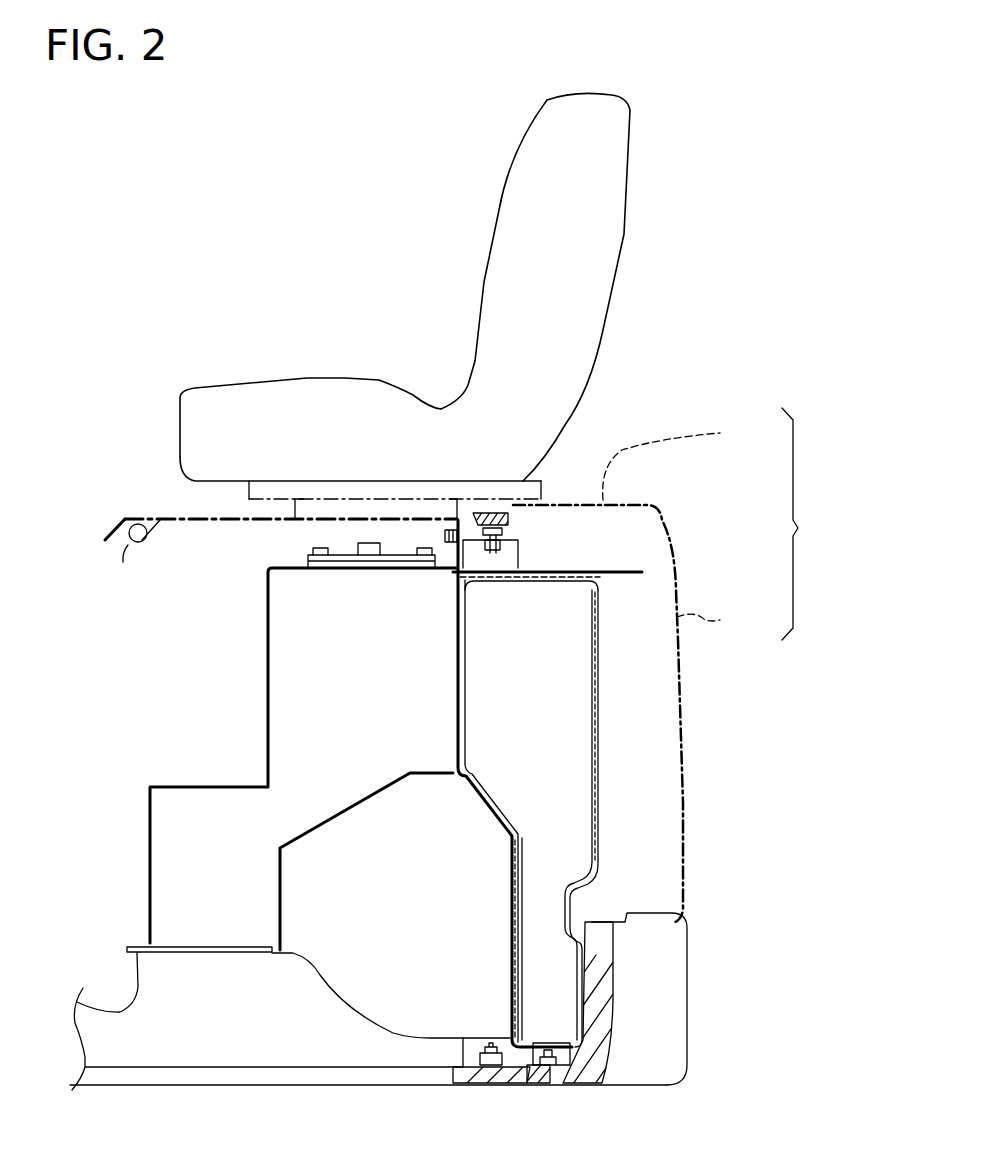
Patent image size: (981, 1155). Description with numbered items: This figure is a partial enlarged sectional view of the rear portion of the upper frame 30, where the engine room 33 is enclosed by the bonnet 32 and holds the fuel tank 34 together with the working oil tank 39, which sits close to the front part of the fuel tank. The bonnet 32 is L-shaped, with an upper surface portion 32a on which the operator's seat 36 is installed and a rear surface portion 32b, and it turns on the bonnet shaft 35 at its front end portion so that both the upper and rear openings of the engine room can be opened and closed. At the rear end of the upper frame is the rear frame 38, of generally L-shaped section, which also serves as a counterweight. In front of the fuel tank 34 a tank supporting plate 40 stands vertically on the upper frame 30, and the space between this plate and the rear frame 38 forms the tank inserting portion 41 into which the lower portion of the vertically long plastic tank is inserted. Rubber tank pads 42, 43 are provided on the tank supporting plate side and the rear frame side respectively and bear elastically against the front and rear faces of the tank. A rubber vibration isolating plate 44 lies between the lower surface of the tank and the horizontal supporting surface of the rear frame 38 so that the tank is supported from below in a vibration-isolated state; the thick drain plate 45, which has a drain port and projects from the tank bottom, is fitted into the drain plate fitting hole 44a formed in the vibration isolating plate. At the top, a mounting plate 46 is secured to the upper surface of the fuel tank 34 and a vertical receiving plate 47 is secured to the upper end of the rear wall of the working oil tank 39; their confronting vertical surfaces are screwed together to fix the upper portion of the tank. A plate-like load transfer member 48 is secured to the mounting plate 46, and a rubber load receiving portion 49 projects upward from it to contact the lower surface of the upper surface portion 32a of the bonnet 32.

The upper frame 30 is at (293, 1087).
The bonnet 32 is at (678, 665).
The upper surface portion 32a is at (690, 460).
The rear surface portion 32b is at (724, 618).
The engine room 33 is at (405, 897).
The fuel tank 34 is at (598, 750).
The bonnet shaft 35 is at (131, 560).
The operator's seat 36 is at (620, 243).
The rear frame 38 is at (613, 1030).
The working oil tank 39 is at (267, 650).
The tank supporting plate 40 is at (512, 938).
The tank inserting portion 41 is at (524, 975).
The tank pad 42 is at (510, 892).
The tank pad 43 is at (587, 968).
The vibration isolating plate 44 is at (518, 1075).
The drain plate fitting hole 44a is at (553, 1083).
The drain plate 45 is at (533, 1067).
The mounting plate 46 is at (607, 568).
The vertical receiving plate 47 is at (447, 553).
The load transfer member 48 is at (522, 552).
The load receiving portion 49 is at (488, 513).